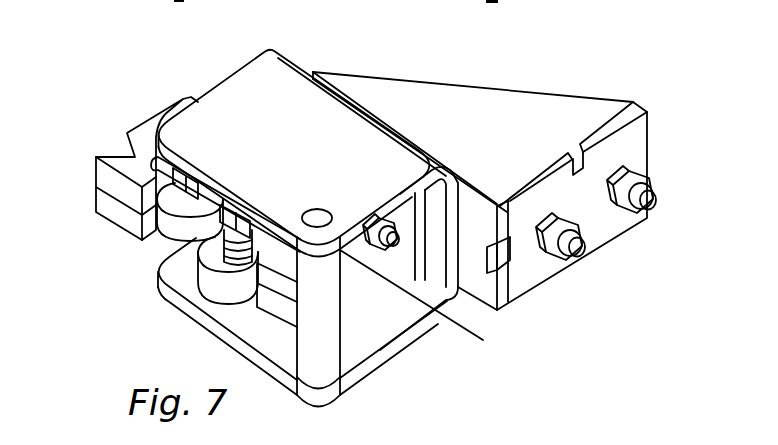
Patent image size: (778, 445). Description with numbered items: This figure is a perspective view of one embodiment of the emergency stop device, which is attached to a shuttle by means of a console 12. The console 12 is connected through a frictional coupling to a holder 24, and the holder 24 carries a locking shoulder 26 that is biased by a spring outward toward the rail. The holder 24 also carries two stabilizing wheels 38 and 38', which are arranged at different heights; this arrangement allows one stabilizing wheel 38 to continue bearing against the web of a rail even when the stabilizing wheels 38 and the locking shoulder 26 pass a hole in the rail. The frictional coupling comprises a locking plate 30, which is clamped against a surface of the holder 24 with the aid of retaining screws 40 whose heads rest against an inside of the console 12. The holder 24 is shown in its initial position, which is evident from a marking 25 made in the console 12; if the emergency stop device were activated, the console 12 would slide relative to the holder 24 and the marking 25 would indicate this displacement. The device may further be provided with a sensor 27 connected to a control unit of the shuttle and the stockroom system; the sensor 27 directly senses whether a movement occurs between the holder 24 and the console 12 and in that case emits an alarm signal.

The console 12 is at (560, 110).
The holder 24 is at (217, 95).
The marking 25 is at (497, 243).
The locking shoulder 26 is at (137, 135).
The sensor 27 is at (495, 143).
The locking plate 30 is at (440, 292).
The stabilizing wheel 38 is at (171, 291).
The stabilizing wheel 38' is at (128, 242).
The retaining screws 40 is at (405, 258).